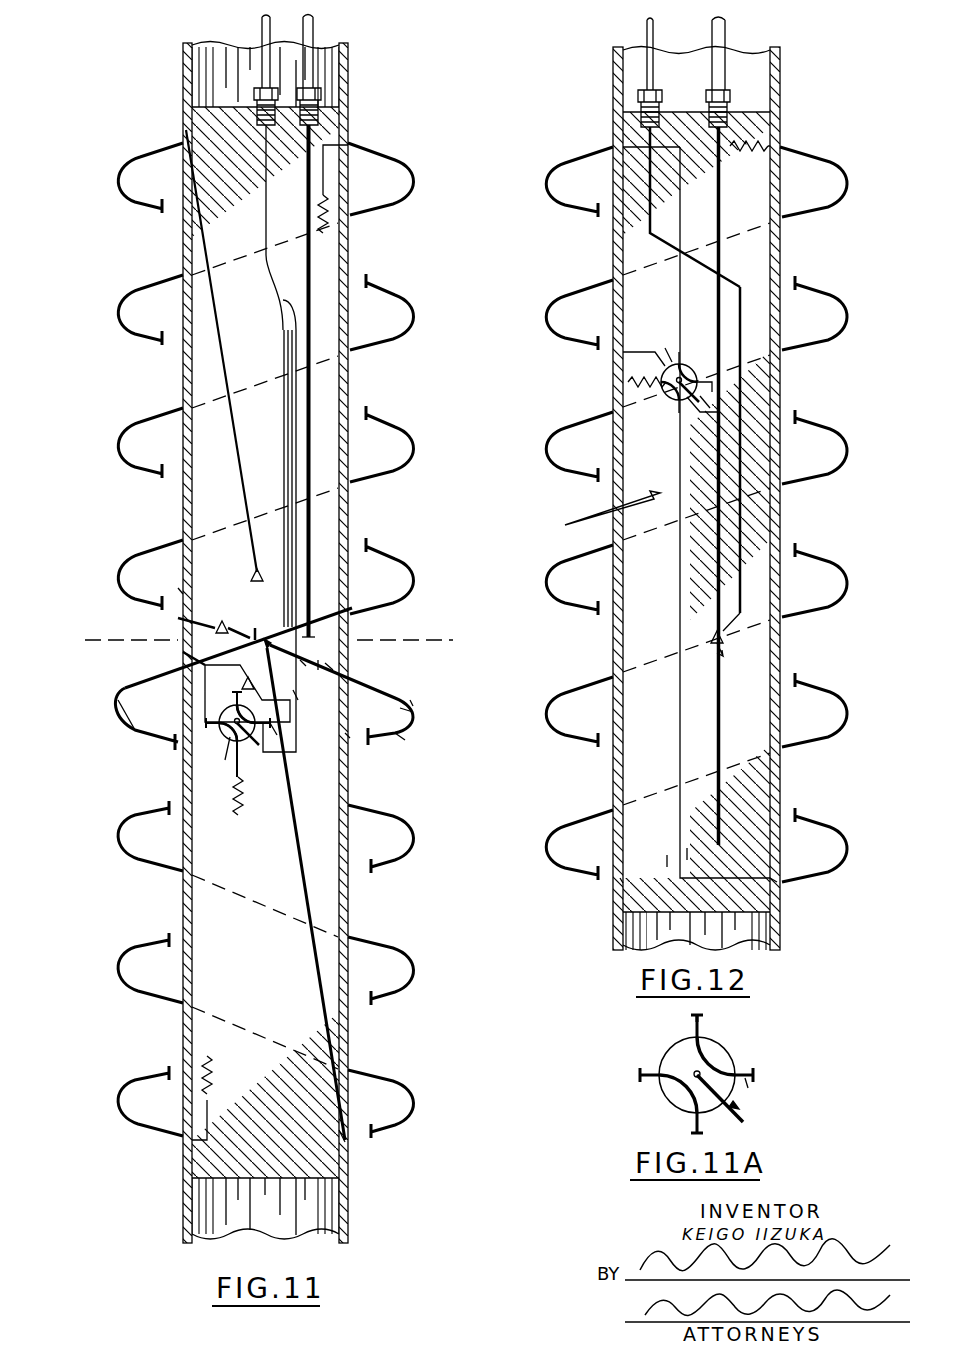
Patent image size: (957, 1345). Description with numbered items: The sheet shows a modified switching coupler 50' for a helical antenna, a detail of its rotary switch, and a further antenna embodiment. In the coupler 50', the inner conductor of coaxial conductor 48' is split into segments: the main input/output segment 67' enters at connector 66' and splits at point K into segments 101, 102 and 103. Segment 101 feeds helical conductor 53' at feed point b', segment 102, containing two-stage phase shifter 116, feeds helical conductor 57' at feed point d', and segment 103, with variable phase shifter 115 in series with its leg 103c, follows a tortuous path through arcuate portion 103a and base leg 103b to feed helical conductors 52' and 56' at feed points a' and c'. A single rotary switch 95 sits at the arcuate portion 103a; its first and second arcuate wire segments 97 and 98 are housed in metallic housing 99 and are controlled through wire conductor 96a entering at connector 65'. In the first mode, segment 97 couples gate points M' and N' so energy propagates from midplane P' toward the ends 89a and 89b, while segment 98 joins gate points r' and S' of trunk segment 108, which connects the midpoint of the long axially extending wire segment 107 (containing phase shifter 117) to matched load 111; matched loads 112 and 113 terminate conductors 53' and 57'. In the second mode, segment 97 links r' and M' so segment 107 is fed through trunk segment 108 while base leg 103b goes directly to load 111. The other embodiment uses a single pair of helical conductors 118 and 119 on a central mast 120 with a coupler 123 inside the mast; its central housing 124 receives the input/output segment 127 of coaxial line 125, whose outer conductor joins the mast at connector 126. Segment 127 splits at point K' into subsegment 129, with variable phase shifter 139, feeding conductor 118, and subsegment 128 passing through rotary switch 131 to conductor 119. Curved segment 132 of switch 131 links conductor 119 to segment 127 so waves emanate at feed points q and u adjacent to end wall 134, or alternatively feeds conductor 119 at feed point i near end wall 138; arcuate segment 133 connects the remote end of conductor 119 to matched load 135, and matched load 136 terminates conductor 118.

In FIG. 11, the connector 65' is at (248, 166).
In FIG. 11, the coaxial conductor 48' is at (362, 52).
In FIG. 11, the connector 66' is at (340, 96).
In FIG. 11, the end of the coupler 89b is at (232, 90).
In FIG. 11, the matched load 113 is at (333, 223).
In FIG. 11, the main input/output segment 67' is at (370, 381).
In FIG. 11, the helical conductor 57' is at (126, 558).
In FIG. 11, the two-stage phase shifter 117 is at (251, 572).
In FIG. 11, the helical conductor 56' is at (395, 561).
In FIG. 11, the segment 102 is at (178, 588).
In FIG. 11, the two-stage phase shifter 116 is at (221, 620).
In FIG. 11, the feed point d' is at (167, 610).
In FIG. 11, the feed point c' is at (280, 641).
In FIG. 11, the base leg 103b is at (182, 640).
In FIG. 11, the midplane P' is at (266, 638).
In FIG. 11, the variable phase shifter 115 is at (242, 683).
In FIG. 11, the split point K is at (376, 659).
In FIG. 11, the feed point a' is at (132, 710).
In FIG. 11, the feed point b' is at (354, 695).
In FIG. 11, the arcuate portion 103a is at (205, 692).
In FIG. 11A, the arcuate portion 103a is at (690, 1022).
In FIG. 11, the helical conductor 53' is at (448, 694).
In FIG. 11, the stationary gate point M' is at (191, 708).
In FIG. 11A, the stationary gate point M' is at (731, 1023).
In FIG. 11, the segment 101 is at (413, 710).
In FIG. 11, the first arcuate wire segment 97 is at (220, 717).
In FIG. 11A, the first arcuate wire segment 97 is at (710, 1055).
In FIG. 11, the trunk segment 108 is at (277, 735).
In FIG. 11A, the trunk segment 108 is at (745, 1078).
In FIG. 11, the segment 103 is at (405, 740).
In FIG. 11, the helical conductor 52' is at (103, 737).
In FIG. 11, the stationary gate point N' is at (169, 749).
In FIG. 11A, the stationary gate point N' is at (646, 1052).
In FIG. 11, the leg 103c is at (347, 735).
In FIG. 11, the rotary switch 95 is at (233, 740).
In FIG. 11A, the rotary switch 95 is at (738, 1098).
In FIG. 11, the metallic housing 99 is at (230, 737).
In FIG. 11, the second arcuate wire segment 98 is at (242, 750).
In FIG. 11A, the second arcuate wire segment 98 is at (690, 1082).
In FIG. 11, the wire conductor 96a is at (298, 688).
In FIG. 11, the stationary gate point r' is at (282, 750).
In FIG. 11A, the stationary gate point r' is at (774, 1063).
In FIG. 11, the stationary gate point S' is at (252, 788).
In FIG. 11A, the stationary gate point S' is at (671, 1124).
In FIG. 11, the matched load 111 is at (240, 817).
In FIG. 11, the axially extending wire segment 107 is at (314, 942).
In FIG. 11, the coupler 50' is at (264, 949).
In FIG. 11, the matched load 112 is at (205, 1071).
In FIG. 11, the end of the coupler 89a is at (240, 1180).
In FIG. 12, the coaxial line 125 is at (727, 32).
In FIG. 12, the end wall 138 is at (690, 110).
In FIG. 12, the connector 126 is at (737, 97).
In FIG. 12, the matched load 136 is at (753, 145).
In FIG. 12, the feed point i is at (647, 147).
In FIG. 12, the central housing 124 is at (662, 243).
In FIG. 12, the input/output segment 127 is at (722, 257).
In FIG. 12, the rotary switch 131 is at (693, 345).
In FIG. 12, the arcuate segment 133 is at (650, 352).
In FIG. 12, the split point K' is at (795, 364).
In FIG. 12, the matched load 135 is at (627, 380).
In FIG. 12, the curved segment 132 is at (700, 410).
In FIG. 12, the coupler 123 is at (591, 514).
In FIG. 12, the subsegment 129 is at (730, 555).
In FIG. 12, the subsegment 128 is at (678, 613).
In FIG. 12, the variable phase shifter 139 is at (723, 638).
In FIG. 12, the helical conductor 118 is at (565, 823).
In FIG. 12, the central mast 120 is at (780, 788).
In FIG. 12, the helical conductor 119 is at (840, 838).
In FIG. 12, the feed point q is at (620, 878).
In FIG. 12, the feed point u is at (777, 880).
In FIG. 12, the end wall 134 is at (675, 912).